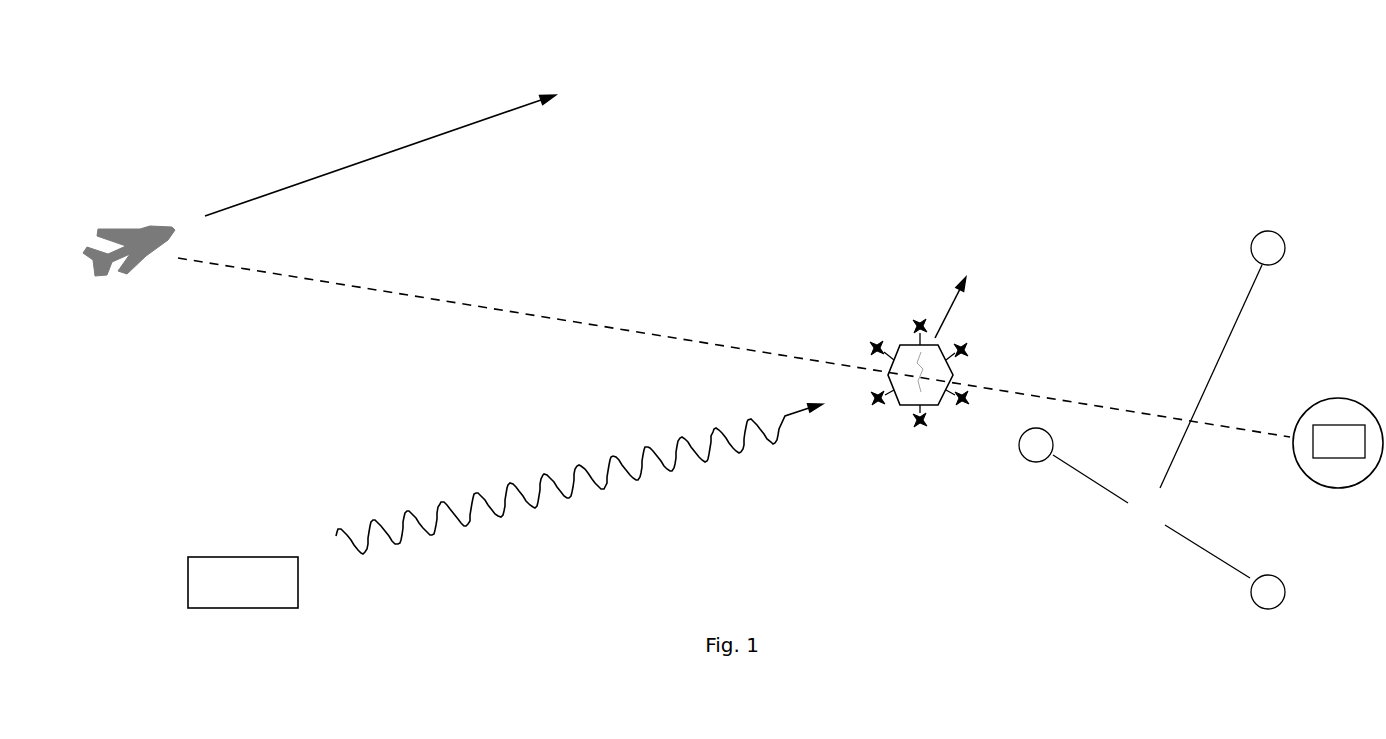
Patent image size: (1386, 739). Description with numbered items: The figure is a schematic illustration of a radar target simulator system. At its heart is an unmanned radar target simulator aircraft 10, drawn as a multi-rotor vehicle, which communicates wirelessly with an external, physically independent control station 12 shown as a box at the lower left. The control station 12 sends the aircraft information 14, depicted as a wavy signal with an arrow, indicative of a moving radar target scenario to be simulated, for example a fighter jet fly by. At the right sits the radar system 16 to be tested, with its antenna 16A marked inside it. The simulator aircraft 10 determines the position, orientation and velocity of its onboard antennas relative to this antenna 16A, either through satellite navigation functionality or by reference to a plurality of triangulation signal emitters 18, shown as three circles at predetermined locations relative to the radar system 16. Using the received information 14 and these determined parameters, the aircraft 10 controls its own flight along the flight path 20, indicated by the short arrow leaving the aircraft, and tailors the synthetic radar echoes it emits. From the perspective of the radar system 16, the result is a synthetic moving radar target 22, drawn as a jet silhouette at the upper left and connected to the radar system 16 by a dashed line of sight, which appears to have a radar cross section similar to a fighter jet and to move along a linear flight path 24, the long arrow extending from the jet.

The radar target simulator aircraft 10 is at (902, 406).
The control station 12 is at (188, 557).
The information 14 is at (580, 460).
The radar system 16 is at (1338, 401).
The antenna 16A is at (1339, 441).
The triangulation signal emitters 18 is at (1152, 420).
The flight path 20 is at (963, 291).
The synthetic moving radar target 22 is at (122, 225).
The linear flight path 24 is at (333, 167).